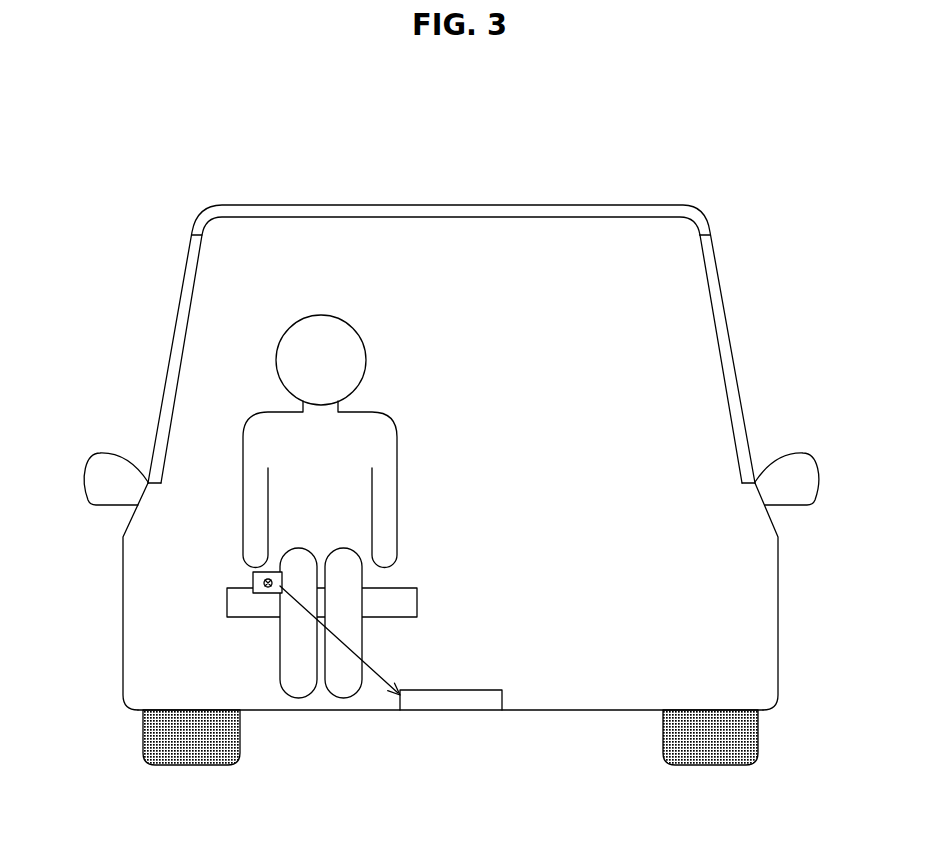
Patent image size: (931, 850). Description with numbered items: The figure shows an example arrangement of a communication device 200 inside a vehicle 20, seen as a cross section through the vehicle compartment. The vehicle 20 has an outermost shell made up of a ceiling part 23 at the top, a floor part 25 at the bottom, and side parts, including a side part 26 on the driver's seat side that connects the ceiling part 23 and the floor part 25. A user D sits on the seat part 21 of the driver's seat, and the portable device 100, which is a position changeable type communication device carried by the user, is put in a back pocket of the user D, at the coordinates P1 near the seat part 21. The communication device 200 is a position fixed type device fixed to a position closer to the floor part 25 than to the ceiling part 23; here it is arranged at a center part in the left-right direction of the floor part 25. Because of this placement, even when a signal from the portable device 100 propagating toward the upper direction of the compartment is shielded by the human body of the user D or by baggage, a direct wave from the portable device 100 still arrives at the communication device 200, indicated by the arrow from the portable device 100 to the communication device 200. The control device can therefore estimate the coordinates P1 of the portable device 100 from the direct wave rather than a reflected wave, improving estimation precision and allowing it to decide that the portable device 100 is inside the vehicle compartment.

The vehicle 20 is at (438, 455).
The seat part of the driver's seat 21 is at (417, 602).
The ceiling part 23 is at (575, 218).
The floor part 25 is at (568, 710).
The side part on the driver's seat side 26 is at (127, 637).
The portable device 100 is at (253, 581).
The communication device 200 is at (465, 690).
The user D is at (393, 468).
The coordinates of the portable device P1 is at (268, 588).